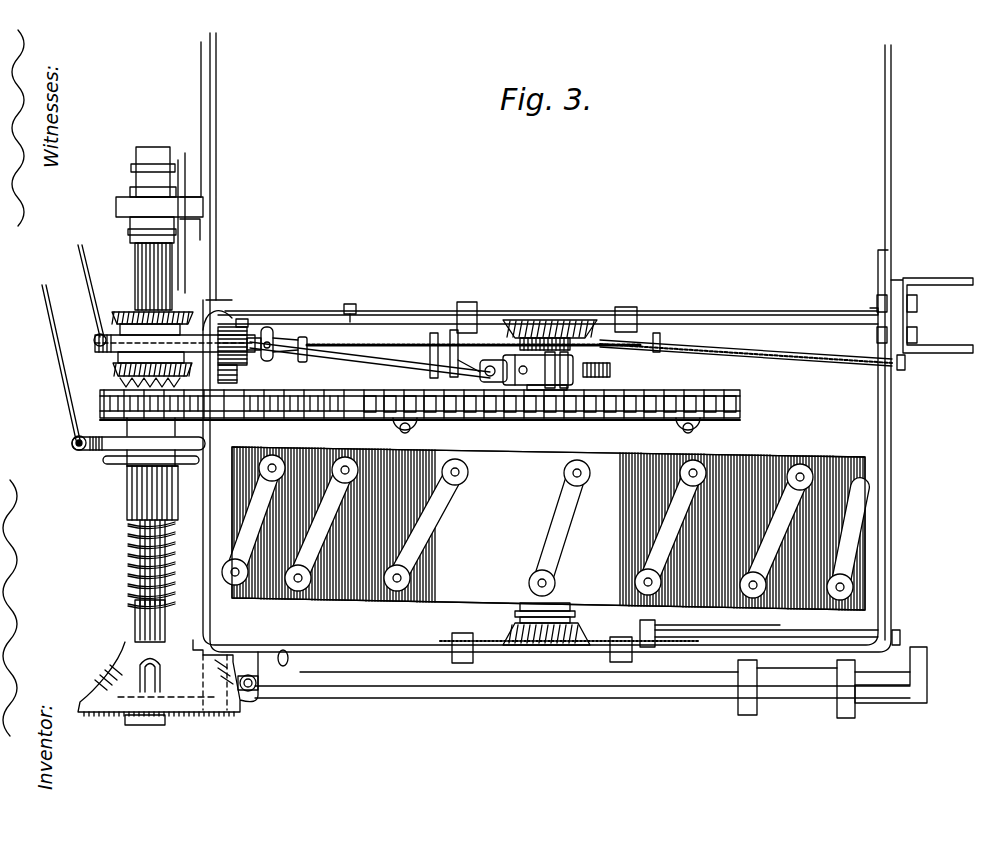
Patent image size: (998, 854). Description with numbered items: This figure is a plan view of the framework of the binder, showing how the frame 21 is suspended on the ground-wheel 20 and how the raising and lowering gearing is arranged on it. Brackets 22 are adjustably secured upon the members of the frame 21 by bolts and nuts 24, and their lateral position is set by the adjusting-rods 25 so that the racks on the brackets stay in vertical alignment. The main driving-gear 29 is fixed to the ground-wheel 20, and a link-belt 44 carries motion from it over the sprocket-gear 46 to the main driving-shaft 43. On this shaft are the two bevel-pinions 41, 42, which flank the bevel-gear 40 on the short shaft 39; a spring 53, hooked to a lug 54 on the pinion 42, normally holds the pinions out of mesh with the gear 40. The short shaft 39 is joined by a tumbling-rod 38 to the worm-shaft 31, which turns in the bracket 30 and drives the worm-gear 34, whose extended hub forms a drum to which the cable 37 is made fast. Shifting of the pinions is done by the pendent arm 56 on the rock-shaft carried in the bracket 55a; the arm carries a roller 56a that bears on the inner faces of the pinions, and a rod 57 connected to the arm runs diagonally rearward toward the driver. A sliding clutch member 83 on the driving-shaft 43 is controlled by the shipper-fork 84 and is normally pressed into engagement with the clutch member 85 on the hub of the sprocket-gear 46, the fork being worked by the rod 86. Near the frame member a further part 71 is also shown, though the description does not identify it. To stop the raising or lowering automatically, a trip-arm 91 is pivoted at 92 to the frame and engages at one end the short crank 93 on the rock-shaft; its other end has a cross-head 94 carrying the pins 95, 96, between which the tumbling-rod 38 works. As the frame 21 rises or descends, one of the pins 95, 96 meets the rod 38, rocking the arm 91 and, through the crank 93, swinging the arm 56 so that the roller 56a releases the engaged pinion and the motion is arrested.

The ground-wheel 20 is at (543, 528).
The frame 21 is at (207, 545).
The brackets 22 is at (542, 322).
The nuts 24 is at (477, 305).
The adjusting-rods 25 is at (766, 354).
The main driving-gear 29 is at (622, 418).
The bracket 30 is at (485, 376).
The worm-shaft 31 is at (570, 362).
The worm-gear 34 is at (612, 370).
The cable 37 is at (410, 300).
The tumbling-rod 38 is at (350, 362).
The short shaft 39 is at (255, 338).
The bevel-gear 40 is at (225, 327).
The bevel-pinion 41 is at (135, 315).
The bevel-pinion 42 is at (120, 372).
The driving-shaft 43 is at (140, 265).
The link-belt 44 is at (282, 421).
The sprocket-gear 46 is at (105, 402).
The spring 53 is at (224, 405).
The lug 54 is at (237, 383).
The bracket 55a is at (120, 384).
The pendent arm 56 is at (95, 335).
The roller 56a is at (115, 358).
The rod 57 is at (78, 266).
The lever 71 is at (215, 300).
The sliding clutch member 83 is at (127, 490).
The shipper-fork 84 is at (80, 451).
The clutch member 85 is at (118, 432).
The rod 86 is at (50, 340).
The trip-arm 91 is at (298, 313).
The pivot 92 is at (345, 320).
The short crank 93 is at (245, 320).
The cross-head 94 is at (452, 330).
The pin 95 is at (485, 363).
The pin 96 is at (432, 358).